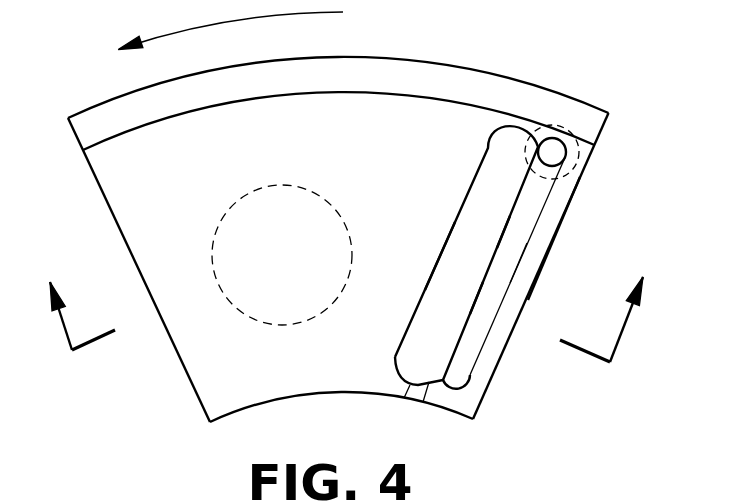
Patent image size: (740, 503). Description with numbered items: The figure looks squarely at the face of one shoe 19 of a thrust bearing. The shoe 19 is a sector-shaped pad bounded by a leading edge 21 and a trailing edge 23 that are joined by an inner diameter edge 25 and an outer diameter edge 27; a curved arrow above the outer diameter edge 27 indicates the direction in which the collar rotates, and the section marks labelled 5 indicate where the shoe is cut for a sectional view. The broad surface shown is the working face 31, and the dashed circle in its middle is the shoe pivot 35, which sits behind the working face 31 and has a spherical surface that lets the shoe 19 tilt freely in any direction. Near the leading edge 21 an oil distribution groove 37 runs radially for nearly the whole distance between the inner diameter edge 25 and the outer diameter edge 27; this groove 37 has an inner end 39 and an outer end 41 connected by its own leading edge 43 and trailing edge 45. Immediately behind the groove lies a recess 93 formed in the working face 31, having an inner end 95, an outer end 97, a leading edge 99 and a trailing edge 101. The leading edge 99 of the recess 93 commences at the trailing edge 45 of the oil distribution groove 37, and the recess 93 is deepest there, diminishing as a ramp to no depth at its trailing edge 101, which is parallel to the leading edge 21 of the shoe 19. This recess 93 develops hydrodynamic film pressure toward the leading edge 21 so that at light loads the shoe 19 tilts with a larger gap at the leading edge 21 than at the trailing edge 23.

The section line 5- 5 is at (343, 305).
The shoe 19 is at (142, 229).
The leading edge 21 is at (566, 216).
The trailing edge 23 is at (143, 286).
The inner diameter edge 25 is at (288, 400).
The outer diameter edge 27 is at (350, 58).
The working face 31 is at (387, 180).
The shoe pivot 35 is at (248, 190).
The oil distribution groove 37 is at (512, 250).
The inner end 39 is at (480, 376).
The outer end 41 is at (558, 133).
The leading edge 43 is at (518, 283).
The trailing edge 45 is at (477, 302).
The recess 93 is at (460, 247).
The inner end 95 is at (407, 400).
The outer end 97 is at (513, 128).
The leading edge 99 is at (505, 235).
The trailing edge 101 is at (433, 270).